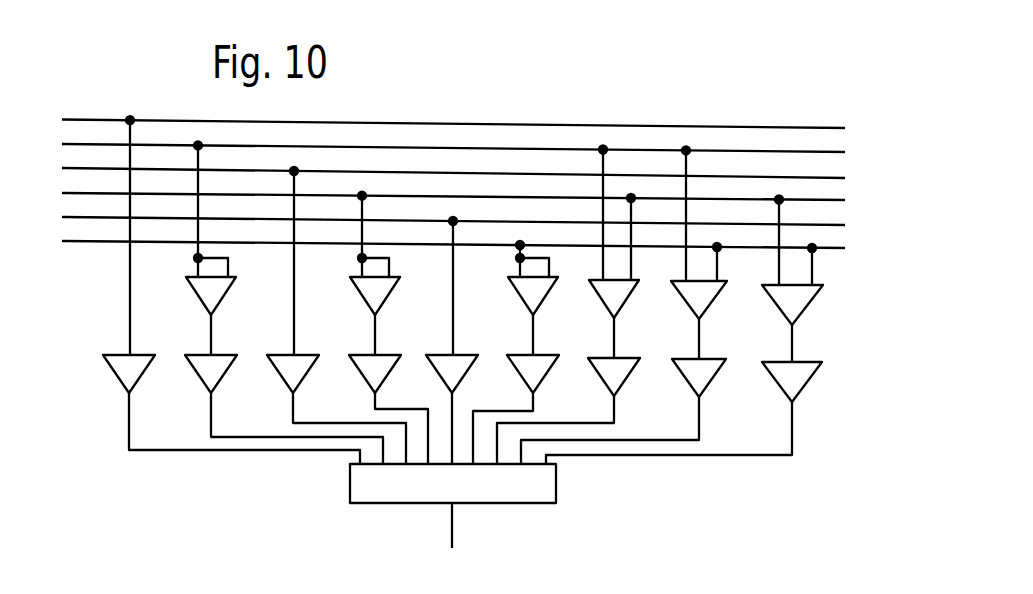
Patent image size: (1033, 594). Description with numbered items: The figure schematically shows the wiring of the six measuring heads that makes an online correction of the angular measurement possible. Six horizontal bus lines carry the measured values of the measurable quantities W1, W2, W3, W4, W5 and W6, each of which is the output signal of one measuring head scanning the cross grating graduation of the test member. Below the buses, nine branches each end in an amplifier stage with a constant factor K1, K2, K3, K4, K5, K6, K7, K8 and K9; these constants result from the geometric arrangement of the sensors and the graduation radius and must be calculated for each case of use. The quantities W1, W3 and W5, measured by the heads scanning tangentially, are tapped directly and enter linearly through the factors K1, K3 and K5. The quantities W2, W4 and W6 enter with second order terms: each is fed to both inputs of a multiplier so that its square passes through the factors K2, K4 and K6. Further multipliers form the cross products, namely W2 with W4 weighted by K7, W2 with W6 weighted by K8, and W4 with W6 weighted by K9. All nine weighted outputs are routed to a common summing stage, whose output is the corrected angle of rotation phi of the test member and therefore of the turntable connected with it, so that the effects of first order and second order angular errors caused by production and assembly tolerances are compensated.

The measurable quantity w1 W1 is at (441, 124).
The measurable quantity w2 W2 is at (441, 148).
The measurable quantity w3 W3 is at (441, 173).
The measurable quantity w4 W4 is at (441, 197).
The measurable quantity w5 W5 is at (441, 221).
The measurable quantity w6 W6 is at (441, 245).
The constant factor k1 K1 is at (231, 290).
The constant factor k2 K2 is at (284, 302).
The constant factor k3 K3 is at (336, 315).
The constant factor k4 K4 is at (388, 328).
The constant factor k5 K5 is at (452, 340).
The constant factor k6 K6 is at (516, 352).
The constant factor k7 K7 is at (568, 305).
The constant factor k8 K8 is at (624, 305).
The constant factor k9 K9 is at (684, 330).
The angle of rotation phi is at (453, 507).